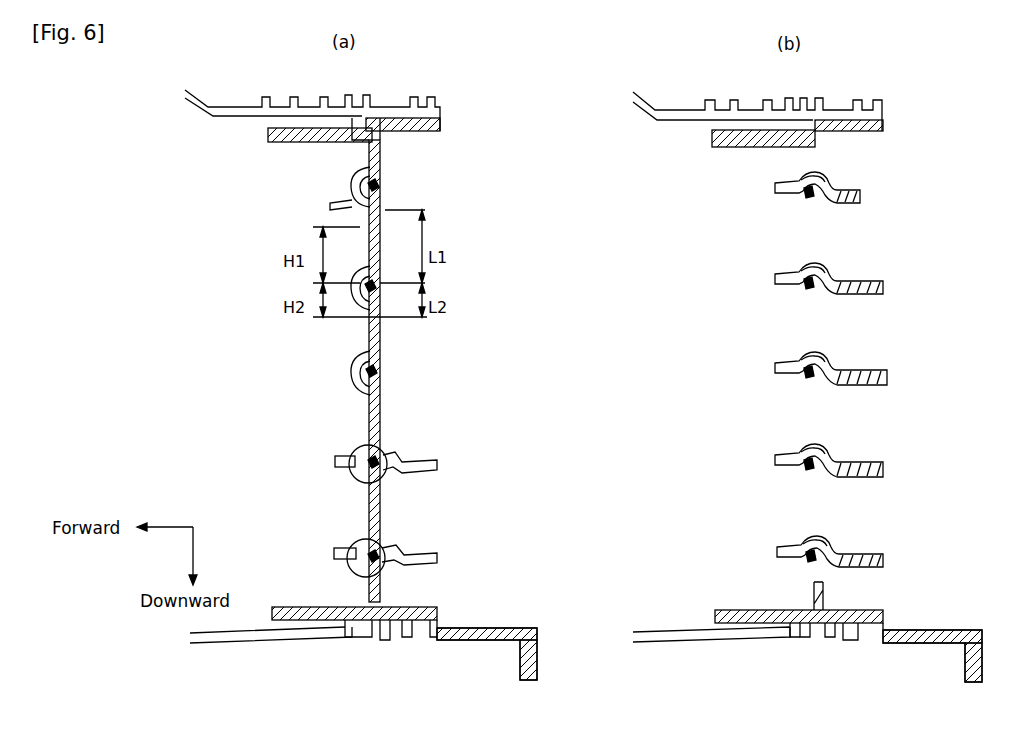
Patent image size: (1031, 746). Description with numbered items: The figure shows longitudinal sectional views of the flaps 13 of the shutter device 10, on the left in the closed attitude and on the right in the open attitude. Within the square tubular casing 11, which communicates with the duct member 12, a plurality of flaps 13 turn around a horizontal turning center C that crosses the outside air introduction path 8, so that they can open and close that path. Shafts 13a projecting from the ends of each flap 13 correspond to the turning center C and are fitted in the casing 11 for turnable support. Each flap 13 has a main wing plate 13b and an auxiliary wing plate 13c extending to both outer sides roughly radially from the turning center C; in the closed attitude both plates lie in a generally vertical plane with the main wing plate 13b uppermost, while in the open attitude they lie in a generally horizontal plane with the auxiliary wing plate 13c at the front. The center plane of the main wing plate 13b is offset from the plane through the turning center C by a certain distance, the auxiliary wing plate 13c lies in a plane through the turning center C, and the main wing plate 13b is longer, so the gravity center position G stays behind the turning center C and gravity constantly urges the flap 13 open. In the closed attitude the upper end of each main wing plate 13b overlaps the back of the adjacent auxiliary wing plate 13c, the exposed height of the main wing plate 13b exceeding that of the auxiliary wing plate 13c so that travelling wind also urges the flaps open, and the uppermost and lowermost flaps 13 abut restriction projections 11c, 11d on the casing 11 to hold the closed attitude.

The outside air introduction path 8 is at (205, 361).
The shutter device 10 is at (490, 104).
The casing 11 is at (487, 645).
The restriction projection 11c is at (347, 145).
The restriction projection 11d is at (377, 596).
The duct member 12 is at (238, 645).
The flap 13 is at (322, 191).
The shaft 13a is at (387, 188).
The main wing plate 13b is at (383, 143).
The auxiliary wing plate 13c is at (352, 205).
The gravity center position G is at (380, 183).
The turning center C is at (350, 182).